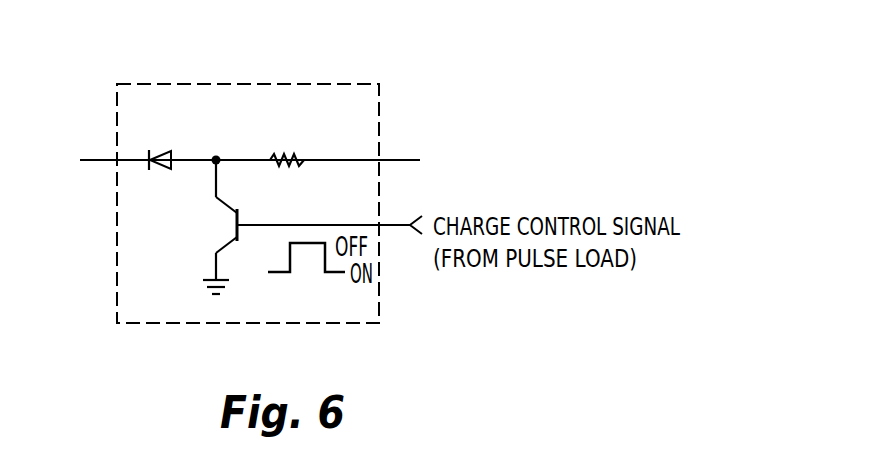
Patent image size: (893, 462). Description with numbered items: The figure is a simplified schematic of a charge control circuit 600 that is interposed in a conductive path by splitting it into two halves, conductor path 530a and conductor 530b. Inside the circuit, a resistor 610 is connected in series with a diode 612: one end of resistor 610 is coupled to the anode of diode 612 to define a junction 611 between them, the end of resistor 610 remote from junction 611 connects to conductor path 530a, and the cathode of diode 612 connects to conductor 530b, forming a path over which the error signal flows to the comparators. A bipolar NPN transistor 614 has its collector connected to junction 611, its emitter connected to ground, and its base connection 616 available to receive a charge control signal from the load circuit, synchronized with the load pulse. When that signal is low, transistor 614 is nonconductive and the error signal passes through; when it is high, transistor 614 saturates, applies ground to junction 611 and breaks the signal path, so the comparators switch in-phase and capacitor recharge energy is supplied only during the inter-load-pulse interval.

The charge control circuit 600 is at (241, 38).
The conductor path 530a is at (405, 158).
The conductor 530b is at (101, 158).
The resistor 610 is at (286, 153).
The junction 611 is at (214, 153).
The diode 612 is at (156, 152).
The bipolar NPN transistor 614 is at (228, 222).
The base connection 616 is at (394, 223).